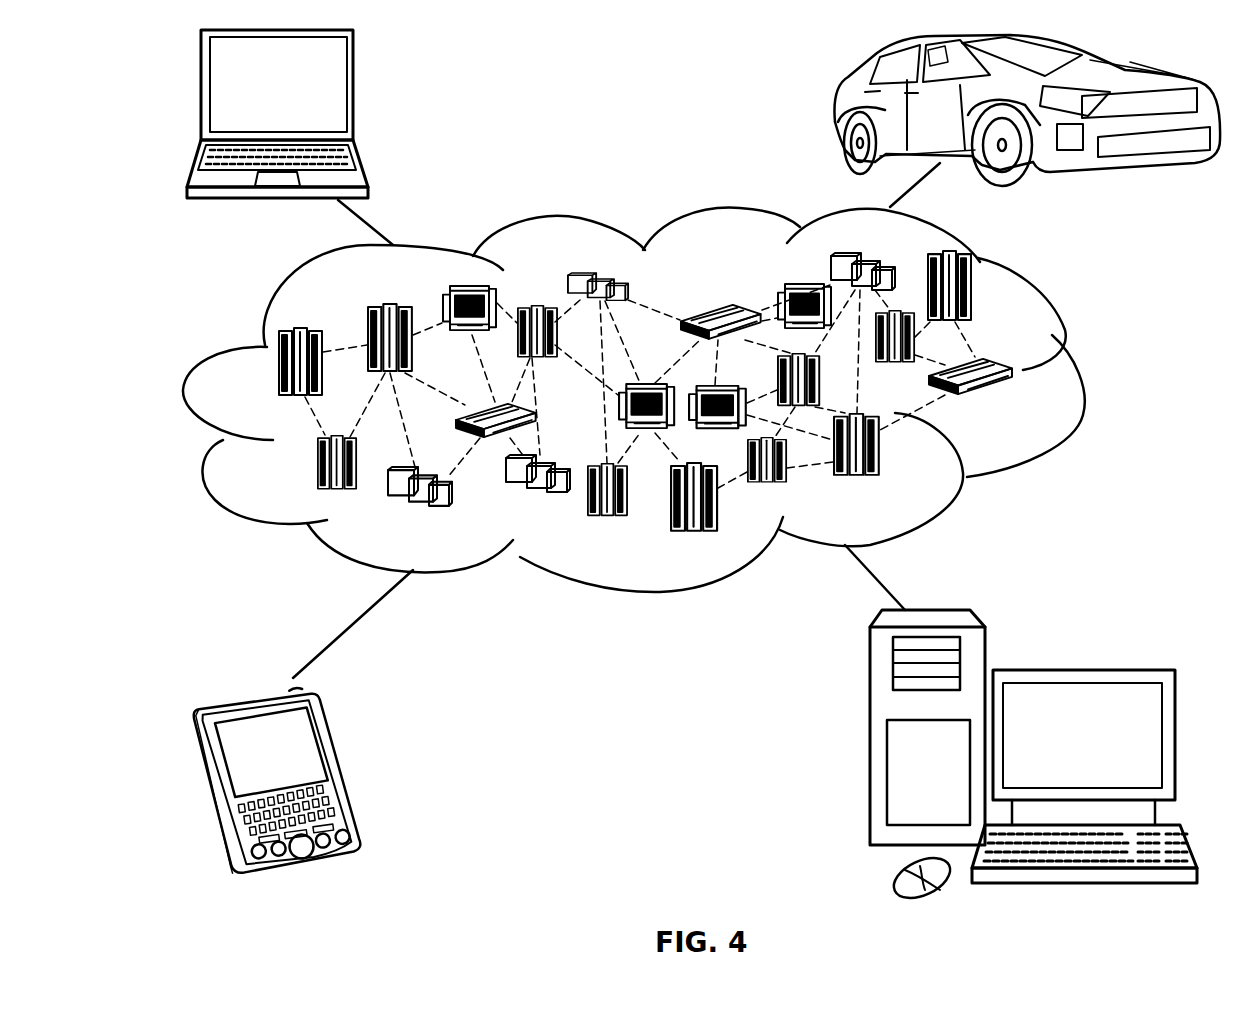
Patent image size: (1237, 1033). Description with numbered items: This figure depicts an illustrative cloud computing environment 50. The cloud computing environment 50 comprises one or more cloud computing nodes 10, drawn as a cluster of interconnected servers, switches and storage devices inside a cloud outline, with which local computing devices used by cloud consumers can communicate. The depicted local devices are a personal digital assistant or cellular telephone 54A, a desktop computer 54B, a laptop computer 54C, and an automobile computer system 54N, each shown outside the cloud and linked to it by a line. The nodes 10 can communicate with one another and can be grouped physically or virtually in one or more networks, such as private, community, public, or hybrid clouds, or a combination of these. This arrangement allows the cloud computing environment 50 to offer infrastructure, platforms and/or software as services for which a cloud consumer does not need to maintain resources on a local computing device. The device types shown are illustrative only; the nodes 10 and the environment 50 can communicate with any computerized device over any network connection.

The cloud computing node 10 is at (1015, 403).
The cloud computing environment 50 is at (1080, 373).
The personal digital assistant or cellular telephone 54A is at (342, 767).
The desktop computer 54B is at (1080, 670).
The laptop computer 54C is at (353, 92).
The automobile computer system 54N is at (835, 109).